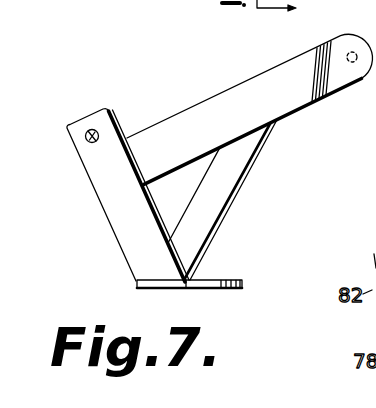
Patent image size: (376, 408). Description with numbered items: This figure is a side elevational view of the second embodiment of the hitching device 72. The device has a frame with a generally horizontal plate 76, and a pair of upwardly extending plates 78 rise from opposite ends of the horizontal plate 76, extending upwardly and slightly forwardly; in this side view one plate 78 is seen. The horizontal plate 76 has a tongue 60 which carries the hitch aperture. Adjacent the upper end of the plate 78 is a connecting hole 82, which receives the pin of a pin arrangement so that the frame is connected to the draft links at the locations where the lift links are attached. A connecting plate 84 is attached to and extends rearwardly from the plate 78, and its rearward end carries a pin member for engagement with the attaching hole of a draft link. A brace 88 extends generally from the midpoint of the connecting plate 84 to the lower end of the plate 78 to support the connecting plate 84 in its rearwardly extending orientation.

The hitching device 72 is at (166, 100).
The upwardly extending plate 78 is at (118, 221).
The connecting hole 82 is at (87, 143).
The connecting plate 84 is at (293, 110).
The brace 88 is at (221, 198).
The horizontal plate 76 is at (140, 289).
The tongue 60 is at (227, 288).